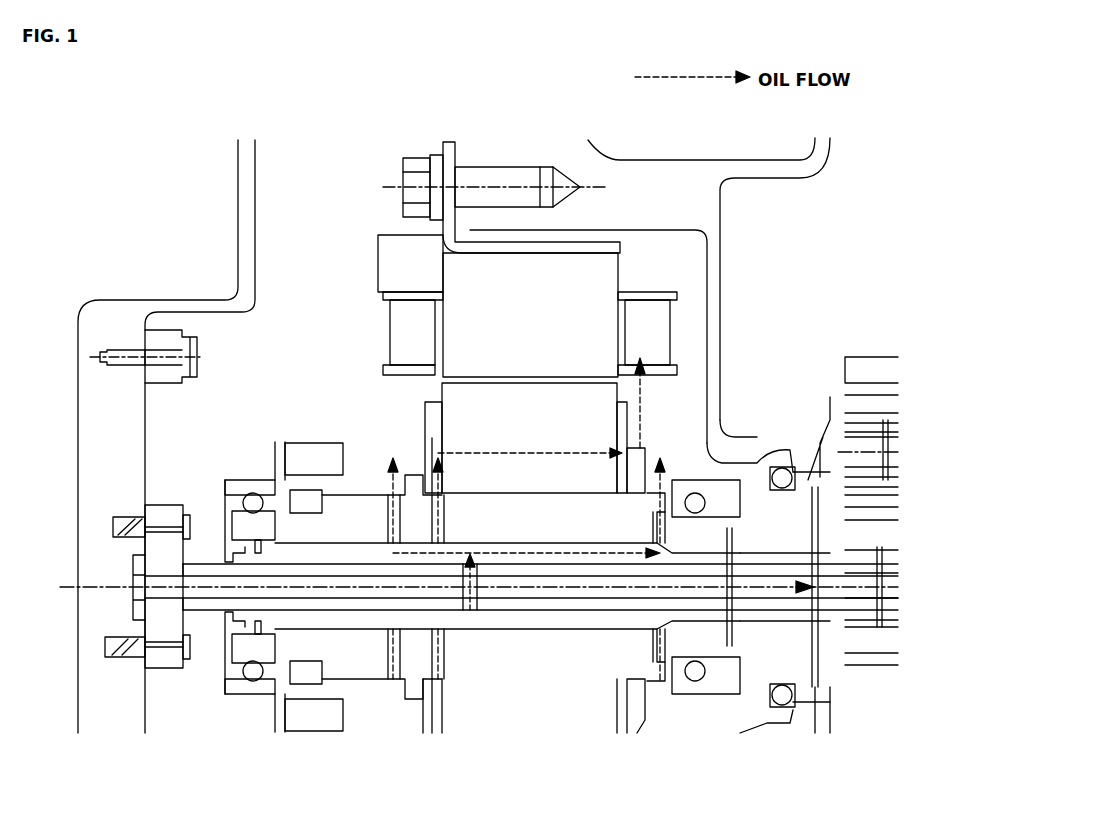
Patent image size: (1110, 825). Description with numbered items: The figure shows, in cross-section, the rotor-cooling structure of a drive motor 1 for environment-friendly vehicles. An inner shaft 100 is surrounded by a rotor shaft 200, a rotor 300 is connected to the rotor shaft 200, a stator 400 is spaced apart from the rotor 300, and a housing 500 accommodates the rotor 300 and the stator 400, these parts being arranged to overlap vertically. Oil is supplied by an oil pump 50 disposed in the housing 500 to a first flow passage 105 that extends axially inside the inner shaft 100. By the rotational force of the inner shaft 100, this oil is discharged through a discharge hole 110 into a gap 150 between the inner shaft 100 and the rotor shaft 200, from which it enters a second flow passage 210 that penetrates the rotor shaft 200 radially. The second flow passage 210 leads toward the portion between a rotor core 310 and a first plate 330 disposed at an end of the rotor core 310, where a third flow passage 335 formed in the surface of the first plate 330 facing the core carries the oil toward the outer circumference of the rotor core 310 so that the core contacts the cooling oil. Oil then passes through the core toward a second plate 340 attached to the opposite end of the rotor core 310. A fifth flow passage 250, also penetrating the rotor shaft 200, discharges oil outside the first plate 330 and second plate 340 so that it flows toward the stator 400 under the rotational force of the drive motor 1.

The drive motor 1 is at (230, 232).
The oil pump 50 is at (163, 553).
The inner shaft 100 is at (200, 600).
The first flow passage 105 is at (143, 602).
The discharge hole 110 is at (468, 582).
The gap 150 is at (290, 553).
The rotor shaft 200 is at (620, 520).
The second flow passage 210 is at (437, 537).
The fifth flow passage 250 is at (393, 537).
The rotor 300 is at (402, 430).
The rotor core 310 is at (593, 402).
The first plate 330 is at (433, 420).
The third flow passage 335 is at (437, 458).
The second plate 340 is at (627, 420).
The stator 400 is at (373, 258).
The housing 500 is at (115, 318).